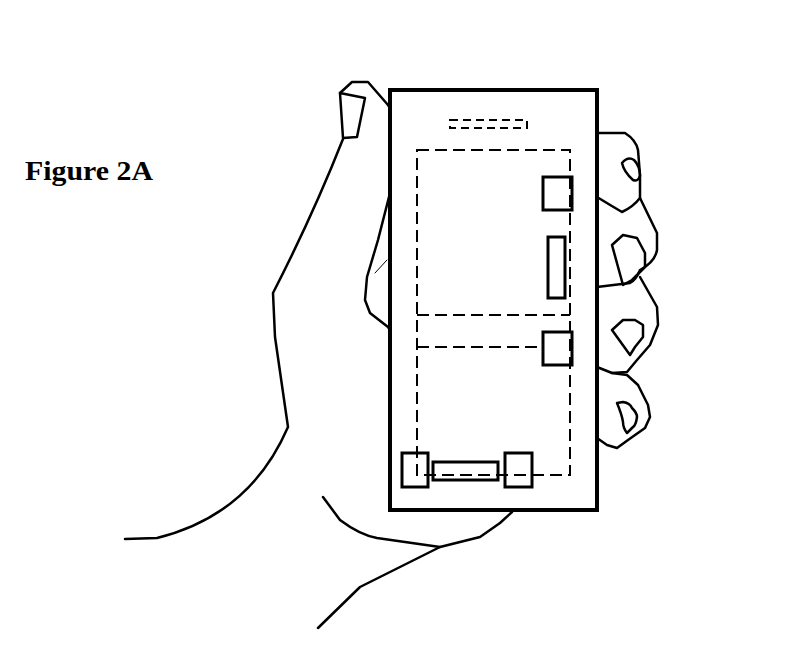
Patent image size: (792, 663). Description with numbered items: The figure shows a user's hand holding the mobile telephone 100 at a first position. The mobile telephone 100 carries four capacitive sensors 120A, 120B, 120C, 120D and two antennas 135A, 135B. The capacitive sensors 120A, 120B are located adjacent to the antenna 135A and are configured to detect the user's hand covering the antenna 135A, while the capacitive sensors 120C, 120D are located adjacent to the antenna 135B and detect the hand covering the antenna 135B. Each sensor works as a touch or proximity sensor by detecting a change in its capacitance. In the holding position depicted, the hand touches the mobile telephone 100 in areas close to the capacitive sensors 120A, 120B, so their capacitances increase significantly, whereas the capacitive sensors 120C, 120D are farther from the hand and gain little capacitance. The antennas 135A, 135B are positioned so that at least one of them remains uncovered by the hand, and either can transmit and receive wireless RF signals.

The mobile telephone 100 is at (514, 85).
The capacitive sensor 120A is at (557, 193).
The capacitive sensor 120B is at (555, 347).
The capacitive sensor 120C is at (517, 472).
The capacitive sensor 120D is at (415, 468).
The antenna 135A is at (557, 265).
The antenna 135B is at (466, 470).